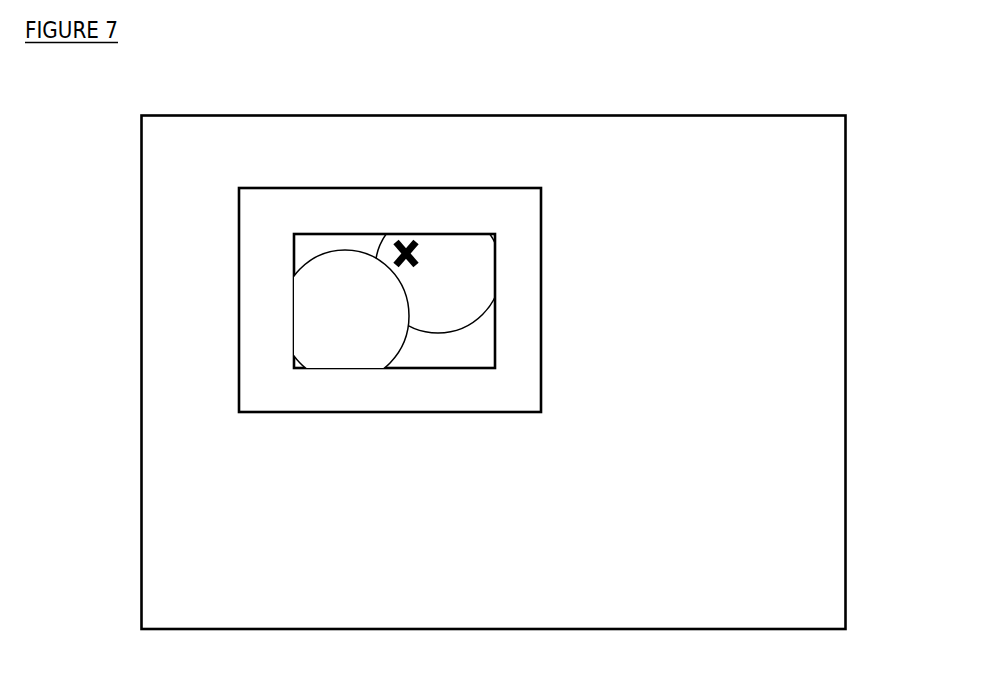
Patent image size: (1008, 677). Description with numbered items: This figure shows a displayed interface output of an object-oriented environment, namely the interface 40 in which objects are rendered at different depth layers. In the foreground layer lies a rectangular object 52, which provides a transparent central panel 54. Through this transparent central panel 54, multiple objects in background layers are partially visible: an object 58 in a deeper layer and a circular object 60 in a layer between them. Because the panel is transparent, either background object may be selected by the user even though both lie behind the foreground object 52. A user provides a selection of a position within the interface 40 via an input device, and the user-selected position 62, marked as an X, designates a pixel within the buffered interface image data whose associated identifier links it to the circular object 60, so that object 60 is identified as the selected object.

The interface 40 is at (494, 373).
The object 52 is at (233, 275).
The transparent central panel 54 is at (405, 368).
The object 58 is at (348, 295).
The circular object 60 is at (474, 273).
The user-selected position 62 is at (403, 233).